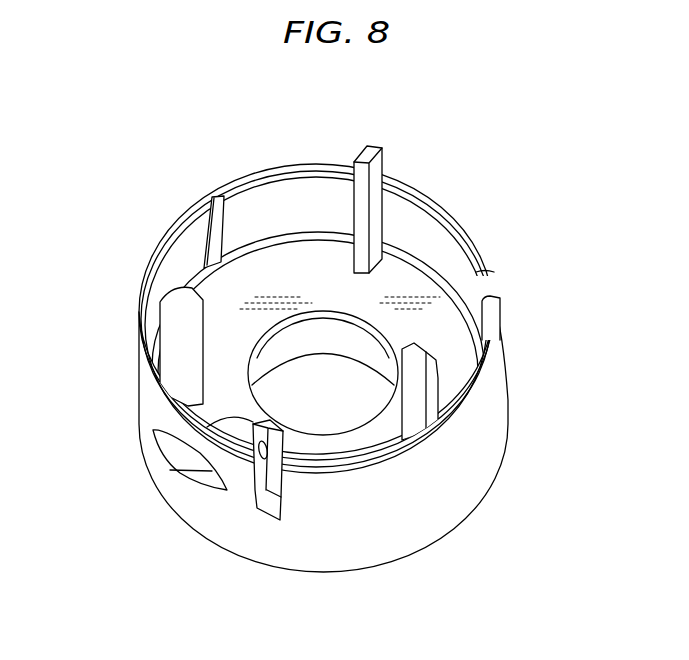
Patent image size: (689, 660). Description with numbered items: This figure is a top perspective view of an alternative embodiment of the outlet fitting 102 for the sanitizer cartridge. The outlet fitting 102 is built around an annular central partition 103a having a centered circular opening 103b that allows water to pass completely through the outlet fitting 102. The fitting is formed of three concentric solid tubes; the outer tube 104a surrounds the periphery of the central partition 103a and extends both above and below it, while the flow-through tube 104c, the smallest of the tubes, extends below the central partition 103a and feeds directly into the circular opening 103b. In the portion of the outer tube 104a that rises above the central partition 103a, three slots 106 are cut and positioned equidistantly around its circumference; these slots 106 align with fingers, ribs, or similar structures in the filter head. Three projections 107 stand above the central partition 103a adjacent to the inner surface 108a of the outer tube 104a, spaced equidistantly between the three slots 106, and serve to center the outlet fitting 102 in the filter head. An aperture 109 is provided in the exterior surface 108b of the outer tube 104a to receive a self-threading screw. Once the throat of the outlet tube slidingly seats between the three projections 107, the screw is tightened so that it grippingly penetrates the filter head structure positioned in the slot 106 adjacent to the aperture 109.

The outlet fitting 102 is at (486, 527).
The annular central partition 103a is at (455, 368).
The centered circular opening 103b is at (354, 400).
The outer tube 104a is at (320, 460).
The flow-through tube 104c is at (322, 335).
The slots 106 is at (202, 216).
The projections 107 is at (372, 148).
The inner surface of the outer tube 108a is at (446, 254).
The exterior surface of the outer tube 108b is at (175, 435).
The aperture 109 is at (266, 453).